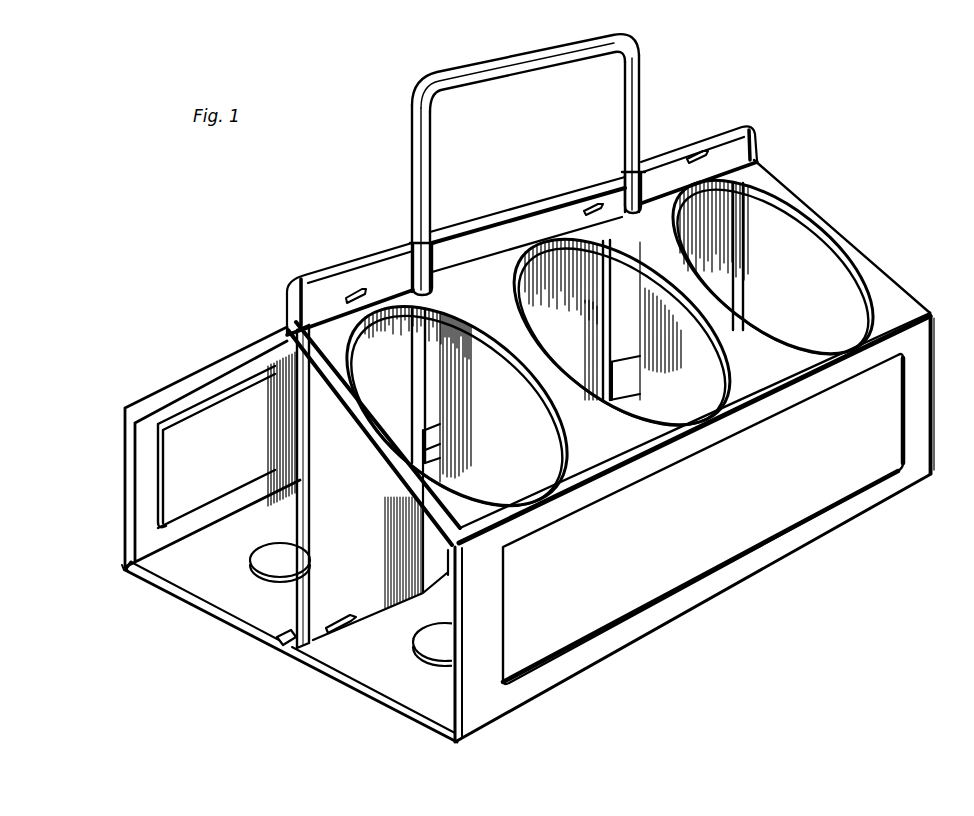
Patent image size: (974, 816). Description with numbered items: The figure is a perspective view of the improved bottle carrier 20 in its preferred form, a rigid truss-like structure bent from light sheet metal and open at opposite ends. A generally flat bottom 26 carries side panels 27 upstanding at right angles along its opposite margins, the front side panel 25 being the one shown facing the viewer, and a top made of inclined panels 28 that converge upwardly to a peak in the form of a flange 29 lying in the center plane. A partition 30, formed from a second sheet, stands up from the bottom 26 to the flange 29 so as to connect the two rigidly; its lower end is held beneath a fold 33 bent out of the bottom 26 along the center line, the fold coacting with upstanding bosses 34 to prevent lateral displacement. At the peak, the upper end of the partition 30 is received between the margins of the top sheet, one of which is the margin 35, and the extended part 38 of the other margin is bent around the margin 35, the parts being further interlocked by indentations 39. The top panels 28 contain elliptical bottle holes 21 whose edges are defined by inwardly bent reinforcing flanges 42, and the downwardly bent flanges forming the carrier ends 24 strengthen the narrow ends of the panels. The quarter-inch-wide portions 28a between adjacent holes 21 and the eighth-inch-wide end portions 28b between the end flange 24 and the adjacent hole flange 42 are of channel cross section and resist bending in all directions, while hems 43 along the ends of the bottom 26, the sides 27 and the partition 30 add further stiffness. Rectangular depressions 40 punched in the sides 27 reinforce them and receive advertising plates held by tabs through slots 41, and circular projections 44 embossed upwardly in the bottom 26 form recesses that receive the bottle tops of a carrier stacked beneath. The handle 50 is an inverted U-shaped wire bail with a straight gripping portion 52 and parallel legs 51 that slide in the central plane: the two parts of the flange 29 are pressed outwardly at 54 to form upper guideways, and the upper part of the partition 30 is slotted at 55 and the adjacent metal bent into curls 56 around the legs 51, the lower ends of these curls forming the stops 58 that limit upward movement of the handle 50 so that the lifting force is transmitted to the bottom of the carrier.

The carrier 20 is at (236, 345).
The bottle holes 21 is at (358, 386).
The carrier ends 24 is at (268, 352).
The front side wall 25 is at (680, 604).
The bottom 26 is at (346, 672).
The side panels 27 is at (136, 497).
The top panels 28 is at (782, 184).
The narrowed portions of the top panels 28a is at (538, 364).
The end portions of the top panels 28b is at (380, 447).
The flange 29 is at (668, 158).
The partition 30 is at (316, 527).
The fold 33 is at (280, 645).
The bosses 34 is at (350, 618).
The margin 35 is at (346, 272).
The extended part of the margin 38 is at (526, 212).
The indentations 39 is at (357, 296).
The rectangular depressions 40 is at (801, 518).
The slots 41 is at (228, 387).
The flanges 42 is at (551, 402).
The hems 43 is at (133, 568).
The circular projections 44 is at (262, 565).
The handle 50 is at (531, 156).
The handle legs 51 is at (412, 156).
The handle portion 52 is at (530, 56).
The upper guides 54 is at (416, 244).
The slots 55 is at (462, 328).
The curls 56 is at (420, 403).
The stops 58 is at (670, 372).